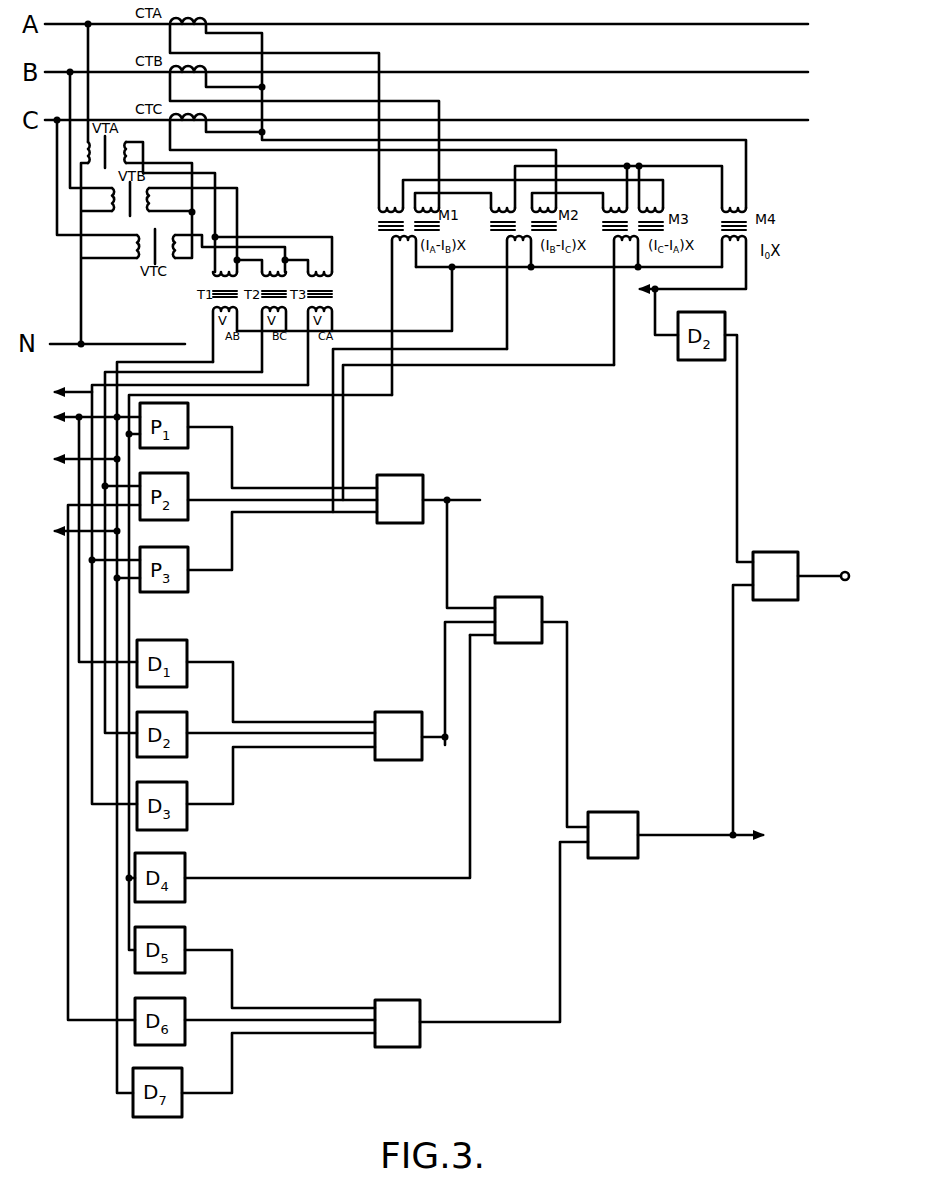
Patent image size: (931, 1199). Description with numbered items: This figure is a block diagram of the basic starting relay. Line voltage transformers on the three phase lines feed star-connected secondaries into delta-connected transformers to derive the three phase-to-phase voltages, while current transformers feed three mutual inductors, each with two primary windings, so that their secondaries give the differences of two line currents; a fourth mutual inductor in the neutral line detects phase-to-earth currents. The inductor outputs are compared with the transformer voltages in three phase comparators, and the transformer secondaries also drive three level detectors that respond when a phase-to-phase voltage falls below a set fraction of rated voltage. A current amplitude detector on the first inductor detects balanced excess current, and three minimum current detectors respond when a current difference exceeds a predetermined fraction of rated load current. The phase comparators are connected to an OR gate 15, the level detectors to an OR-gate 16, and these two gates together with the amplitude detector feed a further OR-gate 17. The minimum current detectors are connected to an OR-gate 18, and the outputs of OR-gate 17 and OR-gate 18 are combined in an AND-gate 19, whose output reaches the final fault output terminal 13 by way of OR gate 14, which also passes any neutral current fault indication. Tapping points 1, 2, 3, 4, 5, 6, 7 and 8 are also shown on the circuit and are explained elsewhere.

The tapping point 1 is at (64, 393).
The tapping point 2 is at (75, 460).
The tapping point 3 is at (75, 532).
The tapping point 4 is at (87, 418).
The tapping point 5 is at (636, 290).
The tapping point 6 is at (462, 548).
The tapping point 7 is at (458, 703).
The tapping point 8 is at (710, 717).
The final fault output terminal 13 is at (841, 582).
The OR gate 14 is at (775, 550).
The OR gate 15 is at (425, 480).
The OR-gate 16 is at (437, 694).
The further OR-gate 17 is at (545, 605).
The OR-gate 18 is at (420, 1000).
The AND-gate 19 is at (630, 858).